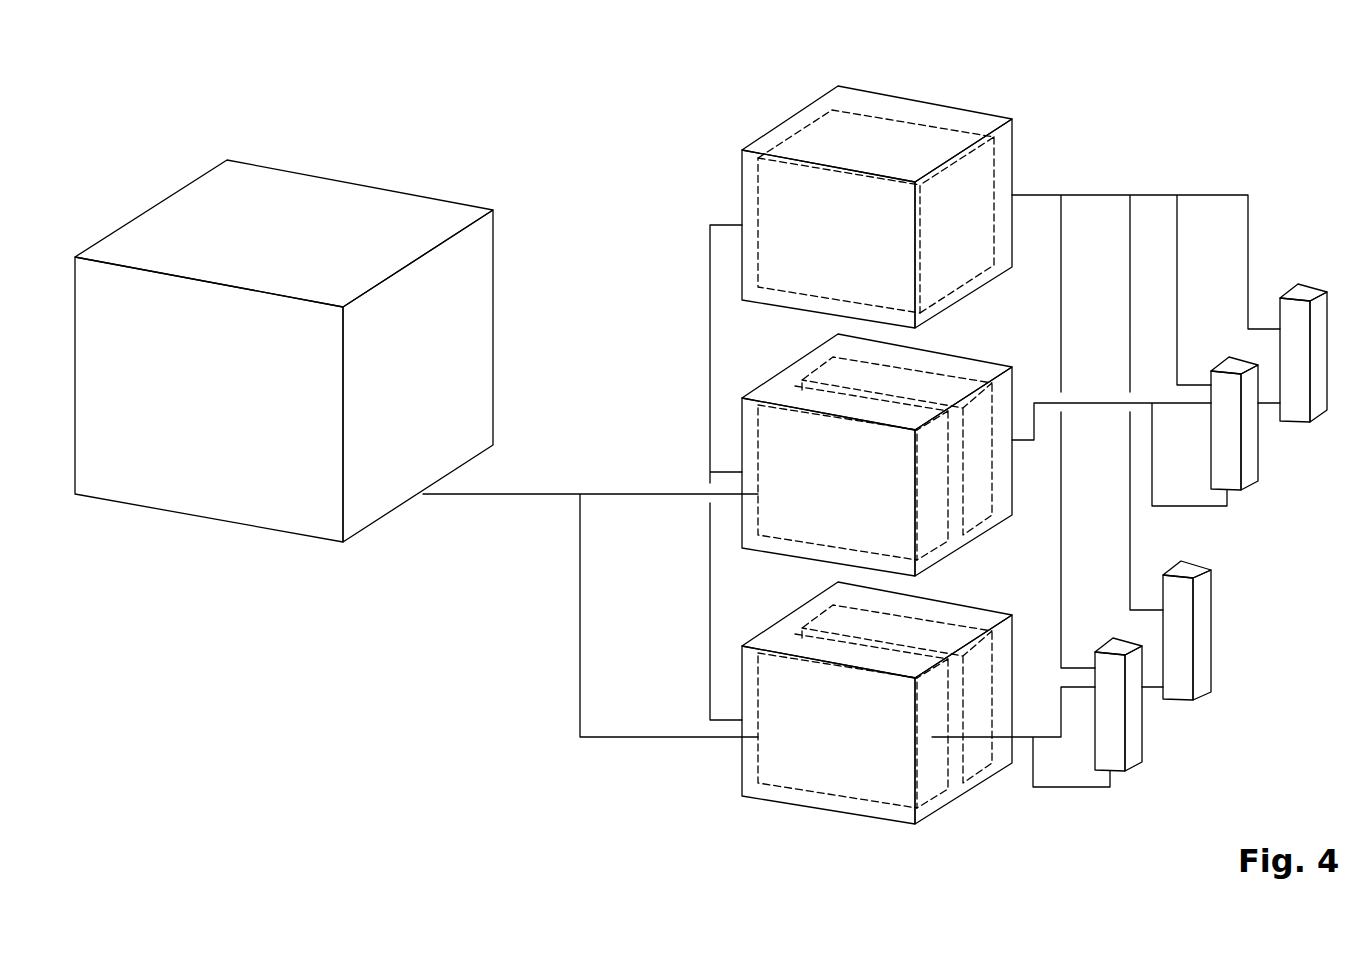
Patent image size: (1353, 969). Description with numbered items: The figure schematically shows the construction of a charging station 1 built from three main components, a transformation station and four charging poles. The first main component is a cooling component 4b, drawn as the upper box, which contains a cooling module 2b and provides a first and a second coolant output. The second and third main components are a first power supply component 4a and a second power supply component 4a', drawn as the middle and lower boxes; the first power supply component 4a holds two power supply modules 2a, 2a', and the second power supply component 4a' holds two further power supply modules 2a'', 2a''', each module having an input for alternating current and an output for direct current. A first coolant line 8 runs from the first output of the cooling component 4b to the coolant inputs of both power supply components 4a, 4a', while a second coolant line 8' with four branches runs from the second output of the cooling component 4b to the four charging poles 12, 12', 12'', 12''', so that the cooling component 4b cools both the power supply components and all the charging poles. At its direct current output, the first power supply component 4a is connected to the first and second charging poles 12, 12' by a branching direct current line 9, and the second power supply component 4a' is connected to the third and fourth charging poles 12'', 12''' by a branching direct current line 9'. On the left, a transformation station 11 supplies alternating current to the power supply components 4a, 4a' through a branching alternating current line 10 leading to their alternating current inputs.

The charging station 1 is at (558, 178).
The power supply module 2a is at (806, 473).
The power supply module 2a' is at (955, 453).
The power supply module 2a'' is at (853, 751).
The power supply module 2a''' is at (900, 727).
The cooling module 2b is at (758, 212).
The first power supply component 4a is at (838, 455).
The second power supply component 4a' is at (836, 703).
The cooling component 4b is at (742, 177).
The first coolant line 8 is at (694, 472).
The second coolant line 8' is at (1146, 392).
The branching direct current line 9 is at (1146, 417).
The branching direct current line 9' is at (1047, 751).
The branching alternating current line 10 is at (491, 497).
The transformation station 11 is at (207, 523).
The first charging pole 12 is at (1235, 463).
The second charging pole 12' is at (1303, 390).
The third charging pole 12'' is at (1122, 745).
The fourth charging pole 12''' is at (1188, 669).